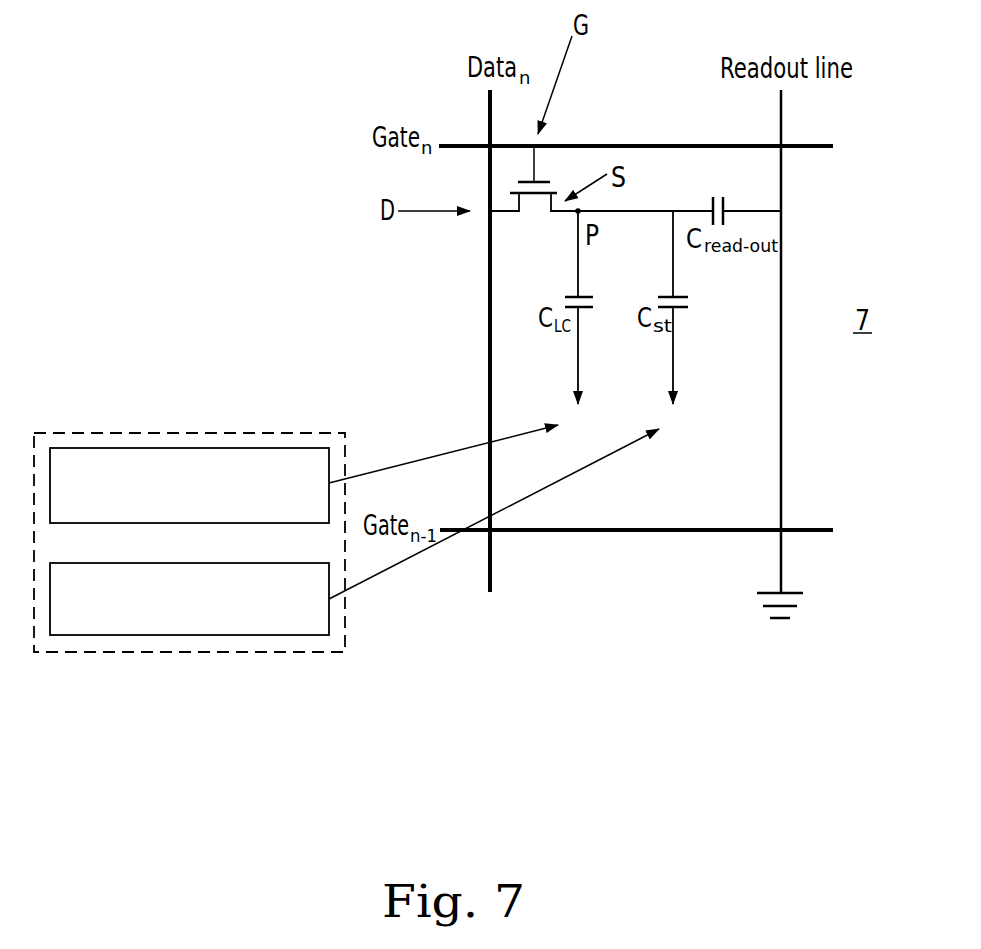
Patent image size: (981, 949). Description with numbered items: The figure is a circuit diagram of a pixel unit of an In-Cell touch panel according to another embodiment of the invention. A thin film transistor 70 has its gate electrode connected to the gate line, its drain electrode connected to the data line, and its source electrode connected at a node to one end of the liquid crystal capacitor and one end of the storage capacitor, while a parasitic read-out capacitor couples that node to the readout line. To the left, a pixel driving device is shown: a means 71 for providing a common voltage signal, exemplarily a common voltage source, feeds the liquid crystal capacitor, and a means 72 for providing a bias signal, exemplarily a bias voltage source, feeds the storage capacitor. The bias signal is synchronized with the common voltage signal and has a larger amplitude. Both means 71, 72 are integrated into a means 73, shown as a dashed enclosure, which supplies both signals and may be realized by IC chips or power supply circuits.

The thin film transistor (switching element) 70 is at (535, 202).
The means for providing a common voltage signal 71 is at (181, 449).
The means for providing a bias signal 72 is at (329, 622).
The integrated means for providing common voltage signal and bias signal 73 is at (60, 433).